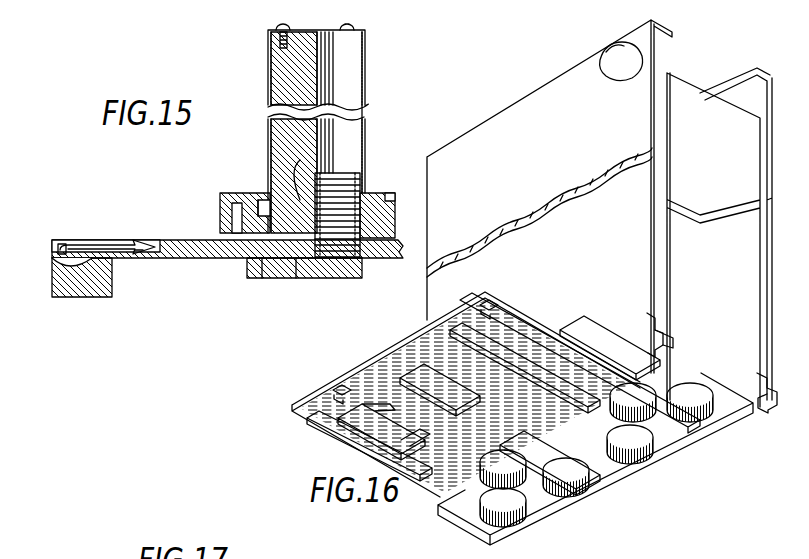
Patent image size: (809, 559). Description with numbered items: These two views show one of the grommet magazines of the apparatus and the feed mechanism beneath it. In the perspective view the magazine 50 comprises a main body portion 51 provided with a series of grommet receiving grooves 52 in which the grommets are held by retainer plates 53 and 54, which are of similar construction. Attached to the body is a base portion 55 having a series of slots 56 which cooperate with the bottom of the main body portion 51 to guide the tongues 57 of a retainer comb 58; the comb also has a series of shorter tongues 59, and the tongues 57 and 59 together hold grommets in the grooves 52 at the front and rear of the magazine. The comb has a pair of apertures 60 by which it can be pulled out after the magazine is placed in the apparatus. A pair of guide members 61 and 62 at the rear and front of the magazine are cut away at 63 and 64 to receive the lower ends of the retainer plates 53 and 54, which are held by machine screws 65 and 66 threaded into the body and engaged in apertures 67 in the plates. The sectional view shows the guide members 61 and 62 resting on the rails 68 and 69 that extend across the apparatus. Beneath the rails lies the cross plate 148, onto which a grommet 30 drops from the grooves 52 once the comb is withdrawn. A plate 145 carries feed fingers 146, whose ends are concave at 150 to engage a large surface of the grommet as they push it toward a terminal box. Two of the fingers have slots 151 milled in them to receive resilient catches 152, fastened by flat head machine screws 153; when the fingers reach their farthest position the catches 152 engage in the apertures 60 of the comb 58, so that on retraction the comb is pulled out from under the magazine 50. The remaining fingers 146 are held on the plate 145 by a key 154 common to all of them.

In FIG. 15, the grommet 30 is at (340, 262).
In FIG. 15, the magazine 50 is at (372, 42).
In FIG. 16, the magazine 50 is at (474, 113).
In FIG. 15, the main body portion 51 is at (282, 73).
In FIG. 16, the main body portion 51 is at (680, 88).
In FIG. 15, the grommet receiving groove 52 is at (331, 95).
In FIG. 16, the grommet receiving groove 52 is at (490, 517).
In FIG. 15, the retainer plate 53 is at (270, 50).
In FIG. 16, the retainer plate 53 is at (539, 96).
In FIG. 15, the retainer plate 54 is at (366, 58).
In FIG. 16, the retainer plate 54 is at (770, 72).
In FIG. 15, the base portion 55 is at (240, 228).
In FIG. 16, the base portion 55 is at (622, 479).
In FIG. 15, the slot 56 is at (298, 160).
In FIG. 16, the slot 56 is at (660, 356).
In FIG. 16, the tongue 57 is at (412, 466).
In FIG. 15, the retainer comb 58 is at (296, 268).
In FIG. 16, the retainer comb 58 is at (362, 366).
In FIG. 16, the shorter tongue 59 is at (370, 412).
In FIG. 15, the aperture 60 is at (256, 254).
In FIG. 16, the aperture 60 is at (330, 391).
In FIG. 15, the guide member 61 is at (242, 196).
In FIG. 16, the guide member 61 is at (660, 323).
In FIG. 15, the guide member 62 is at (373, 196).
In FIG. 16, the guide member 62 is at (768, 410).
In FIG. 15, the cut away portion 63 is at (274, 198).
In FIG. 16, the cut away portion 63 is at (674, 338).
In FIG. 15, the cut away portion 64 is at (356, 176).
In FIG. 16, the cut away portion 64 is at (762, 378).
In FIG. 15, the machine screw 65 is at (276, 26).
In FIG. 15, the machine screw 66 is at (356, 26).
In FIG. 16, the aperture 67 is at (620, 45).
In FIG. 15, the rail 68 is at (232, 212).
In FIG. 15, the rail 69 is at (392, 198).
In FIG. 15, the plate 145 is at (95, 288).
In FIG. 15, the feed finger 146 is at (200, 260).
In FIG. 15, the cross plate 148 is at (268, 270).
In FIG. 15, the concave end 150 is at (280, 270).
In FIG. 15, the slot 151 is at (140, 256).
In FIG. 15, the resilient catch 152 is at (124, 240).
In FIG. 15, the flat head machine screw 153 is at (60, 244).
In FIG. 15, the key 154 is at (70, 268).